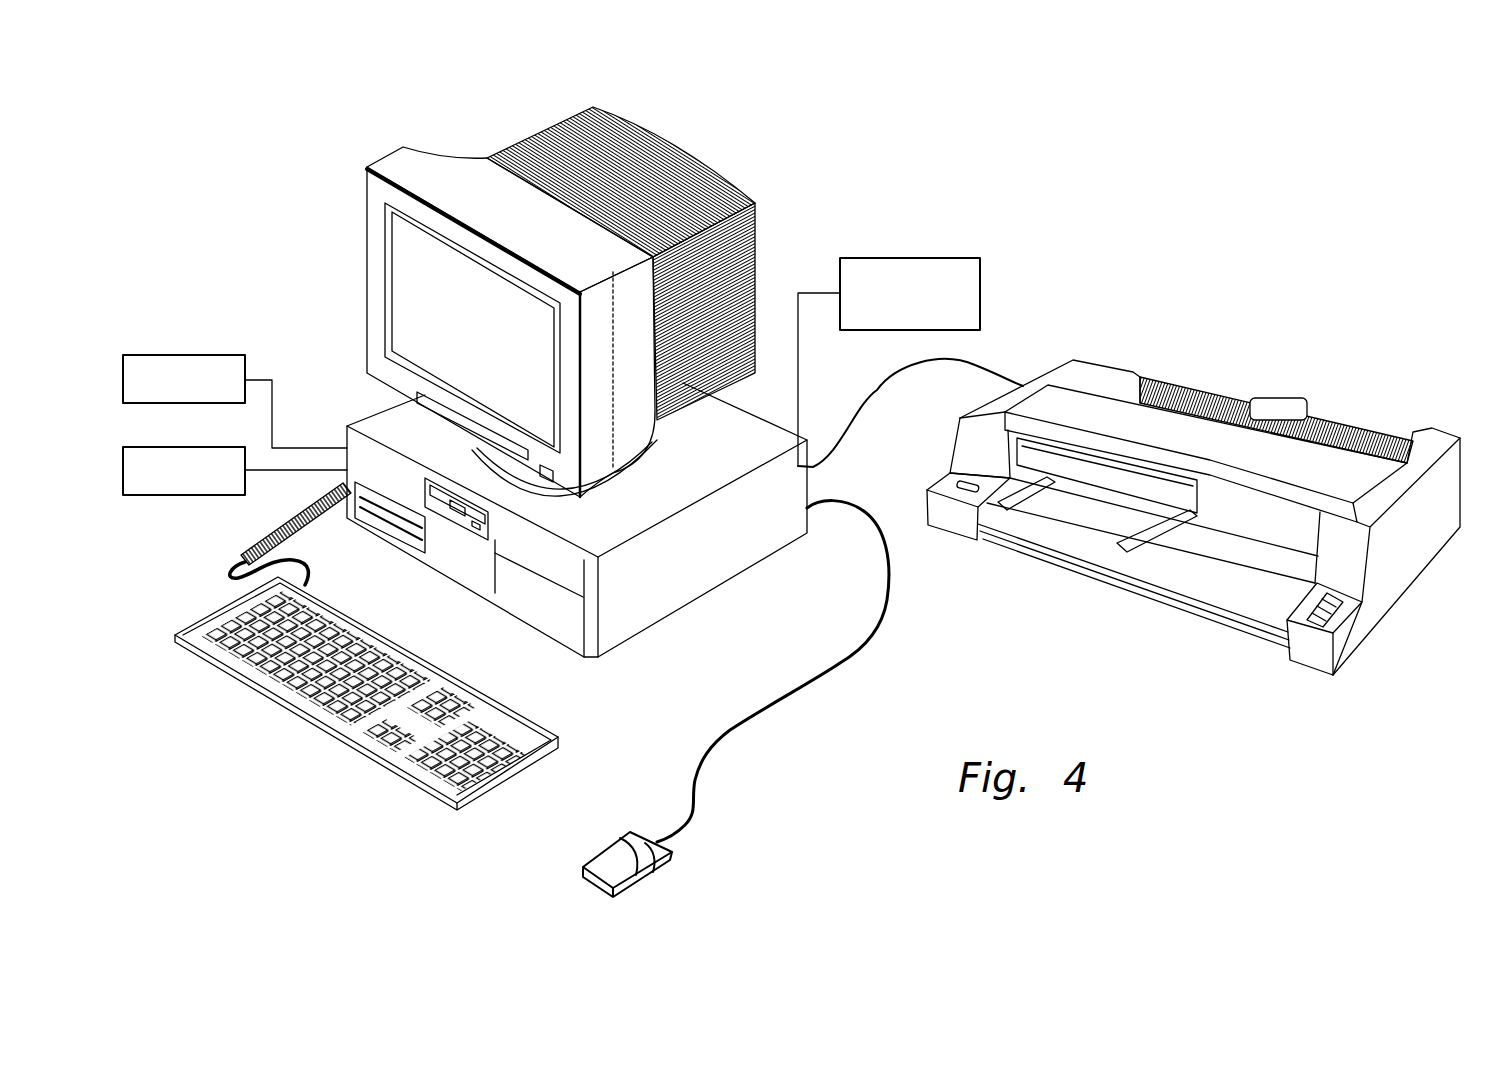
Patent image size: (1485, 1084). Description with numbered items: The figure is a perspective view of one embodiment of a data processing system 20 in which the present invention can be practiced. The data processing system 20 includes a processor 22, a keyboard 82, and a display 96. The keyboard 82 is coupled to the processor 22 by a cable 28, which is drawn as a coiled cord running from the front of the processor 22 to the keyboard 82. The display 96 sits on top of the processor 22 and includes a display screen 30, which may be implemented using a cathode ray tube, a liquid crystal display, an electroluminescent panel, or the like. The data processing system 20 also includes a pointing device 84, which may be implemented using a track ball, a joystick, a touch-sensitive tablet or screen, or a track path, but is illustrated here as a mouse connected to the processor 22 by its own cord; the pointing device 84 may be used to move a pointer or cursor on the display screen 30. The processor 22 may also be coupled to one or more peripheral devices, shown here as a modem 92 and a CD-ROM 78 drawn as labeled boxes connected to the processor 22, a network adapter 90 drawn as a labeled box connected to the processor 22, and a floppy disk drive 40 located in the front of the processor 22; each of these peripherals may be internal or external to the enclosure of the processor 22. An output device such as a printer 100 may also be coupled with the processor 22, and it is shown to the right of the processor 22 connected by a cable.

The data processing system 20 is at (972, 154).
The processor 22 is at (598, 684).
The cable 28 is at (270, 530).
The display screen 30 is at (492, 340).
The floppy disk drive 40 is at (457, 513).
The CD-ROM 78 is at (177, 447).
The keyboard 82 is at (333, 744).
The pointing device 84 is at (662, 870).
The network adapter 90 is at (980, 273).
The modem 92 is at (177, 355).
The display 96 is at (342, 255).
The printer 100 is at (1143, 340).